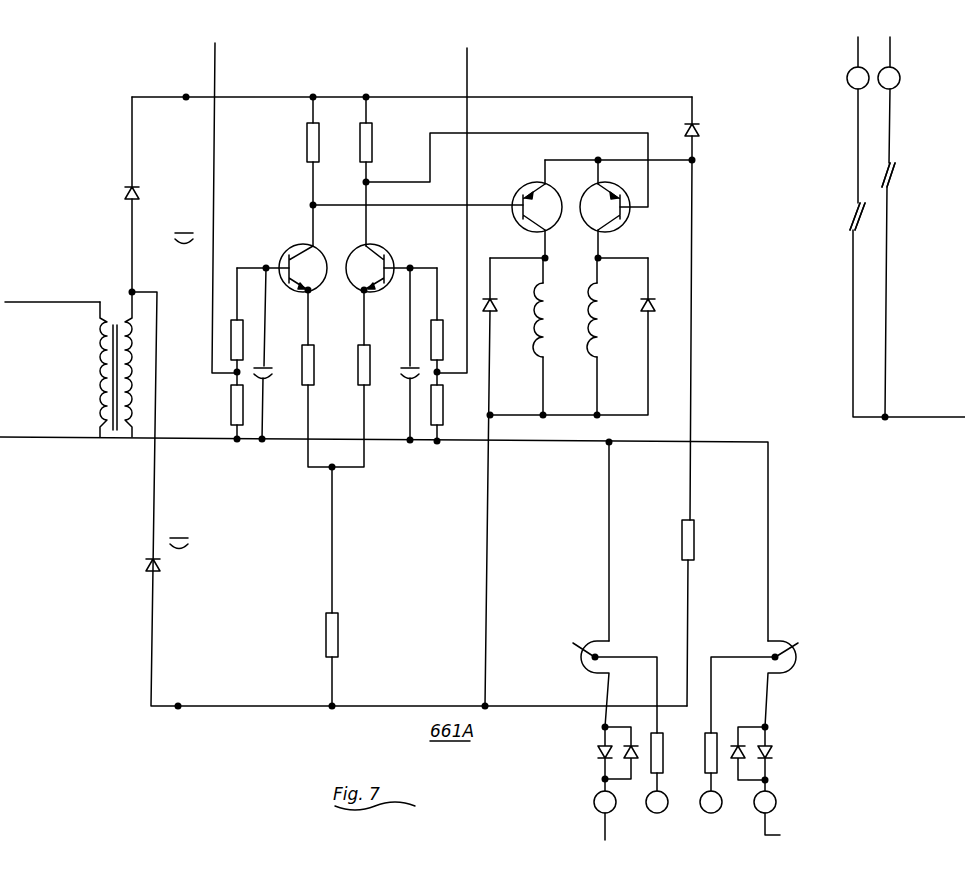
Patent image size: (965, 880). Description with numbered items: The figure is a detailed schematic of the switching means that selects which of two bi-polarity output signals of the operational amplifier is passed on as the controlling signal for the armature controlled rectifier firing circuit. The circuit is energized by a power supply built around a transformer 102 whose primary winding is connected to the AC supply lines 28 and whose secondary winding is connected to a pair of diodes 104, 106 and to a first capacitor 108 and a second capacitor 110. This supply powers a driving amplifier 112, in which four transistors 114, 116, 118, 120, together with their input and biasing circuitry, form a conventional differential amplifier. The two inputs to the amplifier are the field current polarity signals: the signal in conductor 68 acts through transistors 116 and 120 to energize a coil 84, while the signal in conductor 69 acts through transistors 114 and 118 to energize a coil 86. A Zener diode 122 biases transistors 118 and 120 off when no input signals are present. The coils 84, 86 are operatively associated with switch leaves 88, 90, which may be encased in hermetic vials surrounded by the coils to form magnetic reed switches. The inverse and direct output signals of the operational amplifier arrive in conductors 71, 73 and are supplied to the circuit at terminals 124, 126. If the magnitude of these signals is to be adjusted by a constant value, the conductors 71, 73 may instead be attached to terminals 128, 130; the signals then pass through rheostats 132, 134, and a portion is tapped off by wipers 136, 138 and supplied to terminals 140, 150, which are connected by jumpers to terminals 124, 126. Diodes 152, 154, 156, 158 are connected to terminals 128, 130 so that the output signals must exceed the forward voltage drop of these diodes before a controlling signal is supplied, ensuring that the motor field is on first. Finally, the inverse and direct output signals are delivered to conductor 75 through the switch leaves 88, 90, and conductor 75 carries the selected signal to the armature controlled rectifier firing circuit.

The AC supply lines 28 is at (58, 303).
The conductor 68 is at (469, 62).
The conductor 69 is at (217, 62).
The conductor 71 is at (856, 50).
The conductor 73 is at (603, 831).
The conductor 75 is at (915, 417).
The coil 84 is at (602, 301).
The coil 86 is at (548, 301).
The switch leaf 88 is at (852, 220).
The switch leaf 90 is at (894, 168).
The transformer 102 is at (114, 302).
The diode 104 is at (125, 193).
The diode 106 is at (146, 565).
The capacitor 108 is at (184, 232).
The capacitor 110 is at (186, 540).
The driving amplifier 112 is at (396, 503).
The transistor 114 is at (310, 250).
The transistor 116 is at (376, 250).
The transistor 118 is at (542, 193).
The transistor 120 is at (603, 192).
The Zener diode 122 is at (700, 130).
The terminal 124 is at (848, 83).
The terminal 126 is at (900, 80).
The terminal 128 is at (777, 803).
The terminal 130 is at (594, 805).
The rheostat 132 is at (790, 636).
The rheostat 134 is at (593, 642).
The wiper 136 is at (779, 657).
The wiper 138 is at (593, 658).
The terminal 140 is at (704, 812).
The terminal 150 is at (651, 812).
The diode 152 is at (597, 752).
The diode 154 is at (641, 731).
The diode 156 is at (734, 745).
The diode 158 is at (774, 753).